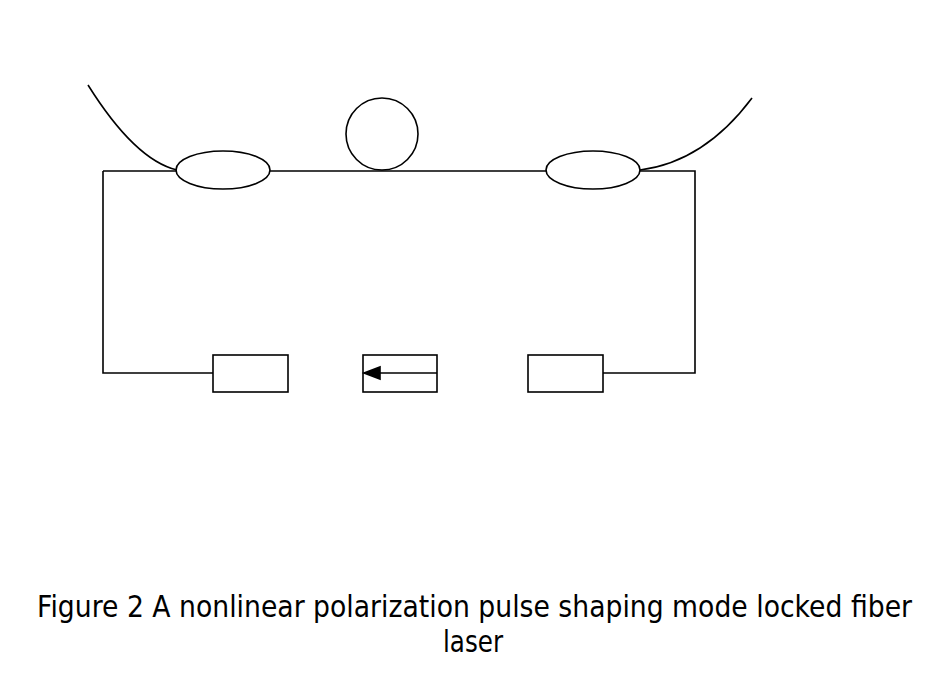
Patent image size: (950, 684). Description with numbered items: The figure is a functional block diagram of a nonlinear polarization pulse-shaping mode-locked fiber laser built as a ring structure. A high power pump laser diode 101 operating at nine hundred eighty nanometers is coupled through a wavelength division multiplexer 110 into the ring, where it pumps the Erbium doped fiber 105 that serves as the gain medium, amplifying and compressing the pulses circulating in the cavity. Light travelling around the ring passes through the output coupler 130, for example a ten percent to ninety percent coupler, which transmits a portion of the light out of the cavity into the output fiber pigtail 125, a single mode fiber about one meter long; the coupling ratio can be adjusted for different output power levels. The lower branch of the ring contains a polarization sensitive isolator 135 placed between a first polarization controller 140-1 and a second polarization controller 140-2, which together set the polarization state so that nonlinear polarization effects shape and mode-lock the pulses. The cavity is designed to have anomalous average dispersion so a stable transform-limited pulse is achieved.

The 980 nm high power pump laser diode 101 is at (105, 105).
The Erbium doped fiber (EDF) 105 is at (390, 115).
The 980/1550 WDM coupler 110 is at (238, 175).
The output fiber pigtail 125 is at (714, 108).
The output coupler 130 is at (604, 168).
The polarization sensitive isolator 135 is at (413, 382).
The polarization controller 140-1 is at (235, 380).
The polarization controller 140-2 is at (563, 382).